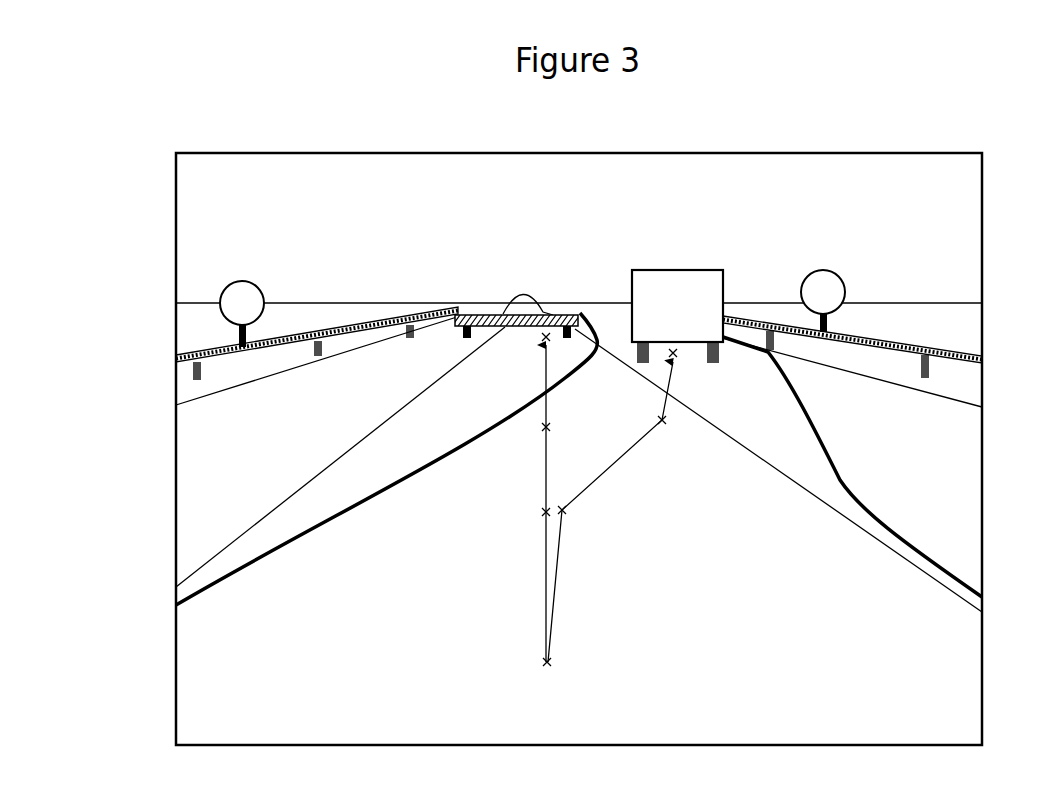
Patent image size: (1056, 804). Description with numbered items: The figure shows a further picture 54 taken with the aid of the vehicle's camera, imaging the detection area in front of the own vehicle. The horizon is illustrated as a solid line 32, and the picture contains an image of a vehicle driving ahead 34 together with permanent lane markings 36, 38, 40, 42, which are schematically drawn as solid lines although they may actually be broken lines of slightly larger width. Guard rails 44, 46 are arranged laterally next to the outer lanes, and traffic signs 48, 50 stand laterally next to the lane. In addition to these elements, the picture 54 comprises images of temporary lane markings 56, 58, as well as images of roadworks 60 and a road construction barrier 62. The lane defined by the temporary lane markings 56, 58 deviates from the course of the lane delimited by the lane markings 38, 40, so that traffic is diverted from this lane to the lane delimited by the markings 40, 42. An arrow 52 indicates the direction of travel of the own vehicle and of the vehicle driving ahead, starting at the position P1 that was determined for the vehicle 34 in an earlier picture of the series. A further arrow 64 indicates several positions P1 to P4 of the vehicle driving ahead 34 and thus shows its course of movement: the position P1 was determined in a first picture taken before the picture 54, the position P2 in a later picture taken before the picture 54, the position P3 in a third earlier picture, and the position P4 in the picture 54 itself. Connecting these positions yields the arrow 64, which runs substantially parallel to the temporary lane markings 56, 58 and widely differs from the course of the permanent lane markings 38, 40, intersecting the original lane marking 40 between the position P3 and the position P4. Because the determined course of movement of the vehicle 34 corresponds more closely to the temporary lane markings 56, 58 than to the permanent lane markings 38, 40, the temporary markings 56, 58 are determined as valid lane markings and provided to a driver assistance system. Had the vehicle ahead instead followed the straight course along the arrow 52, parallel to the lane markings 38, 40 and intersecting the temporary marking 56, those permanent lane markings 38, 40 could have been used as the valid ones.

The horizon line 32 is at (893, 299).
The vehicle driving ahead 34 is at (680, 272).
The lane marking 36 is at (228, 387).
The lane marking 38 is at (440, 382).
The lane marking 40 is at (818, 497).
The lane marking 42 is at (888, 383).
The guard rail 44 is at (268, 341).
The guard rail 46 is at (865, 336).
The traffic sign 48 is at (250, 283).
The traffic sign 50 is at (838, 273).
The arrow 52 is at (545, 466).
The picture 54 is at (935, 152).
The temporary lane marking 56 is at (355, 490).
The temporary lane marking 58 is at (830, 455).
The roadworks 60 is at (536, 290).
The road construction barrier 62 is at (583, 318).
The arrow 64 is at (612, 465).
The position P1 is at (553, 663).
The position P2 is at (566, 512).
The position P3 is at (664, 422).
The position P4 is at (679, 356).